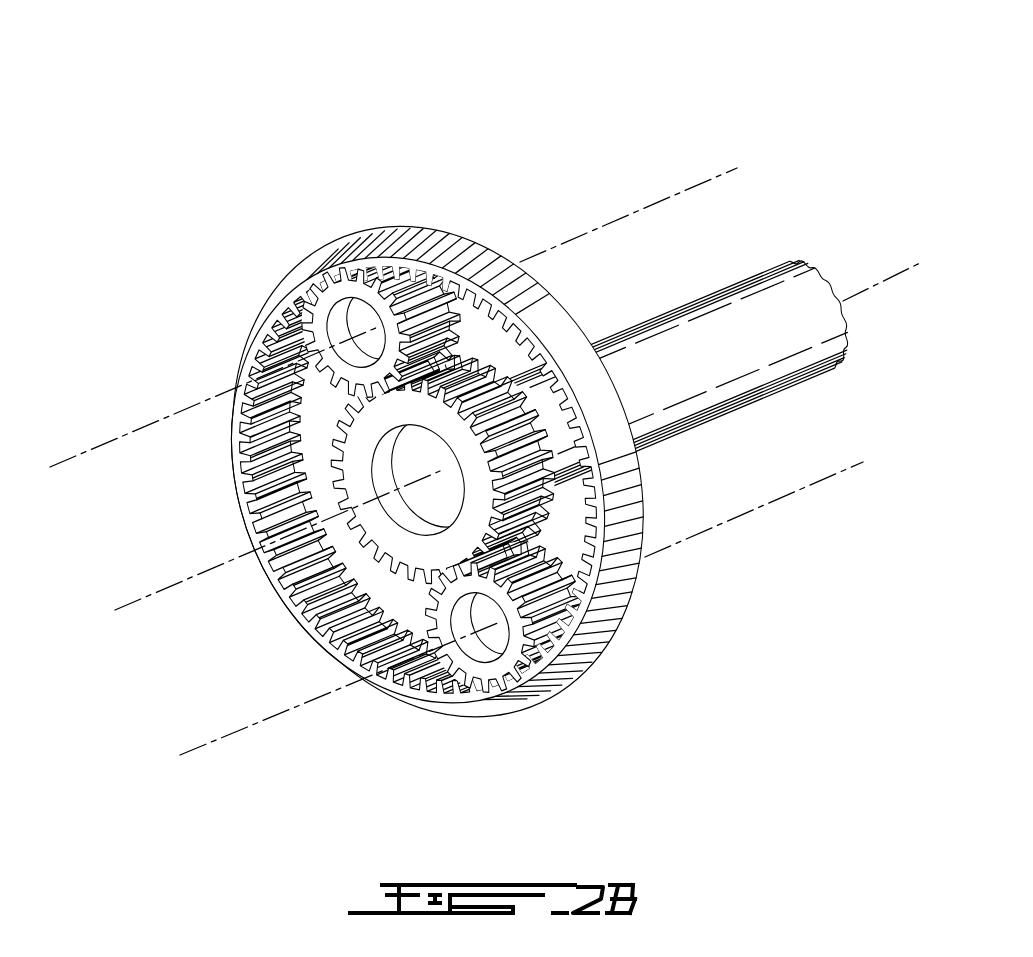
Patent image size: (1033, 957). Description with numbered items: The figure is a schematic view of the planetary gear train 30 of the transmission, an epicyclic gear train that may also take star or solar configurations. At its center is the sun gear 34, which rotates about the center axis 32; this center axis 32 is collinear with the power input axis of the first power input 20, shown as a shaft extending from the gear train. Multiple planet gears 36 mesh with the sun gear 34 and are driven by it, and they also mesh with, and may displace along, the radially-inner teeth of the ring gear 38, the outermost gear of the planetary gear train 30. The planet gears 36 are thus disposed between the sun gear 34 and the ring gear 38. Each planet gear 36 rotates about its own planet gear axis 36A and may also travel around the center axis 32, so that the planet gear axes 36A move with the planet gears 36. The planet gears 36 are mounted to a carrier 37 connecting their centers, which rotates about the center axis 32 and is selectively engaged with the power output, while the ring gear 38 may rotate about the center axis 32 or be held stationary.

The first power input 20 is at (752, 270).
The planetary gear train 30 is at (424, 211).
The center axis 32 is at (177, 590).
The sun gear 34 is at (537, 500).
The planet gears 36 is at (330, 282).
The planet gear axis 36A is at (112, 442).
The carrier 37 is at (653, 204).
The ring gear 38 is at (267, 303).